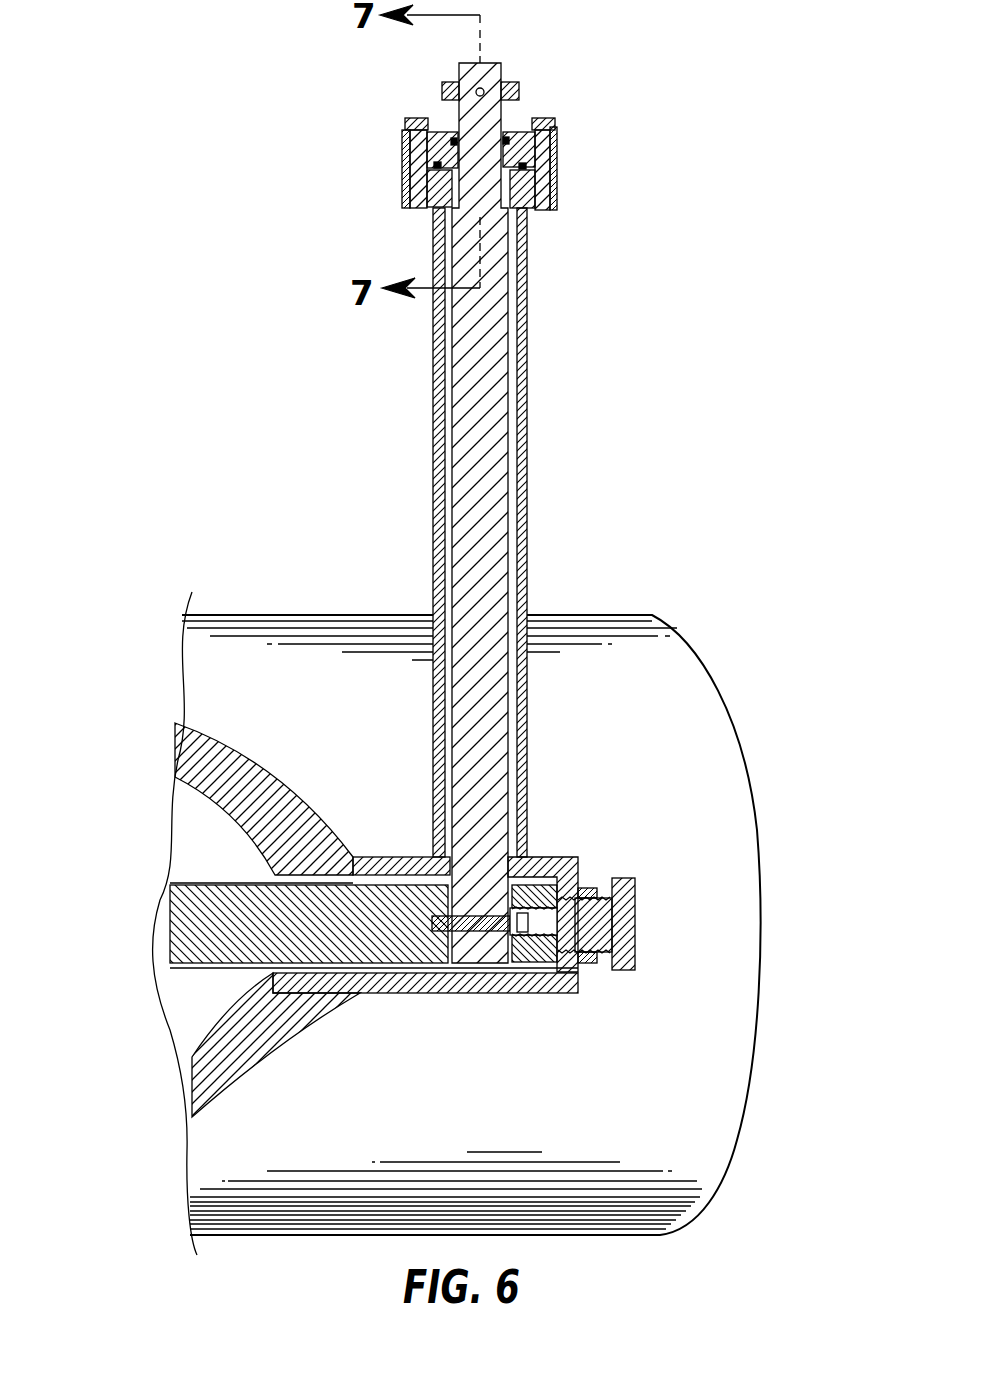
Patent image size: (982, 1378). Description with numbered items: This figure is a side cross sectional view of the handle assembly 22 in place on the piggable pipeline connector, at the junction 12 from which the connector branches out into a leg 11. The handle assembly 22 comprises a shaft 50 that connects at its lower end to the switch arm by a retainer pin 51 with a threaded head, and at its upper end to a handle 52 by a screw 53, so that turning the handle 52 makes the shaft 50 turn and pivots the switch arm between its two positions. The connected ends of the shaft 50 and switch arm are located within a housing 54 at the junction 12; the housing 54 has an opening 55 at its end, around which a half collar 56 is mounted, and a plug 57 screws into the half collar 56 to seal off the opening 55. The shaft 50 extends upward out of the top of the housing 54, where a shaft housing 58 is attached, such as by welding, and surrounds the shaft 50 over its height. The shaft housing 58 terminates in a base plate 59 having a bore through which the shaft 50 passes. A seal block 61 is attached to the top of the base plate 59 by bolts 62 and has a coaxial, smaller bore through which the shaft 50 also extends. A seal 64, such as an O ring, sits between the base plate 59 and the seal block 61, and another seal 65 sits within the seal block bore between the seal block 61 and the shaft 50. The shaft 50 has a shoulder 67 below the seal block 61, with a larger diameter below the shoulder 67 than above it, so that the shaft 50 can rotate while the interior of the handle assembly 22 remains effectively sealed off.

The leg 11 is at (652, 1097).
The junction 12 is at (282, 1000).
The handle assembly 22 is at (532, 489).
The shaft 50 is at (485, 523).
The retainer pin 51 is at (481, 930).
The handle 52 is at (513, 82).
The screw 53 is at (478, 90).
The housing 54 is at (415, 983).
The opening 55 is at (565, 917).
The half collar 56 is at (590, 960).
The plug 57 is at (636, 902).
The shaft housing 58 is at (523, 323).
The base plate 59 is at (433, 202).
The seal block 61 is at (432, 153).
The bolts 62 is at (417, 120).
The seal 64 is at (523, 167).
The seal 65 is at (505, 135).
The shoulder 67 is at (523, 183).